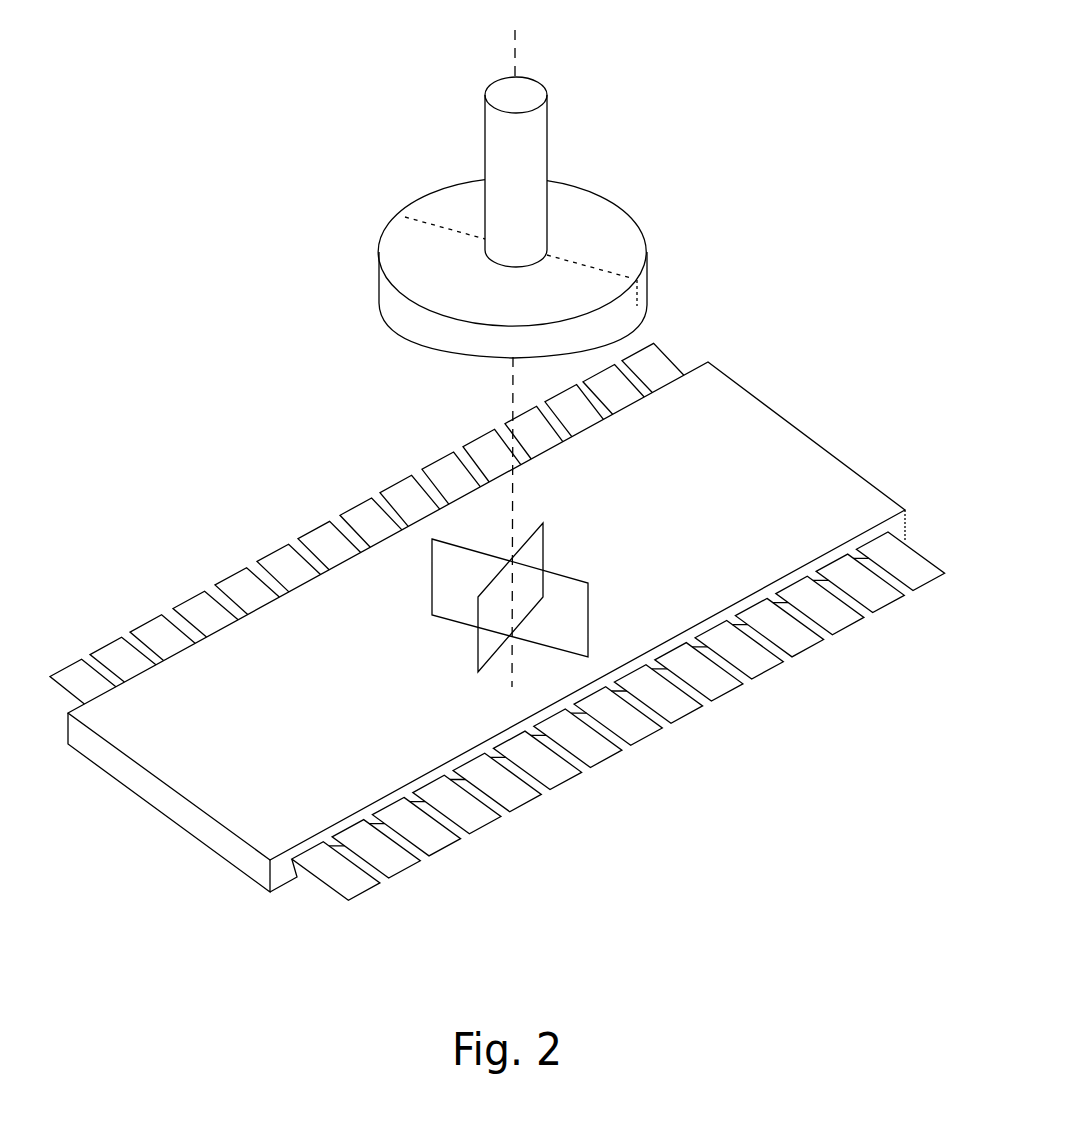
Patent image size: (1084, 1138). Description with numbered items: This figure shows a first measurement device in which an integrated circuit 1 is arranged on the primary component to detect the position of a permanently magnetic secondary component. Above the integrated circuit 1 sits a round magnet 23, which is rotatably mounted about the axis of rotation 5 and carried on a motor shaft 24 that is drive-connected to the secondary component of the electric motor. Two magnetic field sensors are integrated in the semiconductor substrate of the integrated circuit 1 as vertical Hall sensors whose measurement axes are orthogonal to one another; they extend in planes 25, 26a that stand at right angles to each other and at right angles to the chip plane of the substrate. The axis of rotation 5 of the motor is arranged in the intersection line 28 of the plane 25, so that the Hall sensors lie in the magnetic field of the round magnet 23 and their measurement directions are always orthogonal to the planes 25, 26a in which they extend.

The integrated circuit 1 is at (223, 877).
The axis of rotation 5 is at (515, 36).
The round magnet 23 is at (633, 245).
The motor shaft 24 is at (538, 147).
The plane of the first vertical Hall sensor 25 is at (440, 588).
The plane of the second vertical Hall sensor 26a is at (486, 648).
The intersection line 28 is at (514, 504).